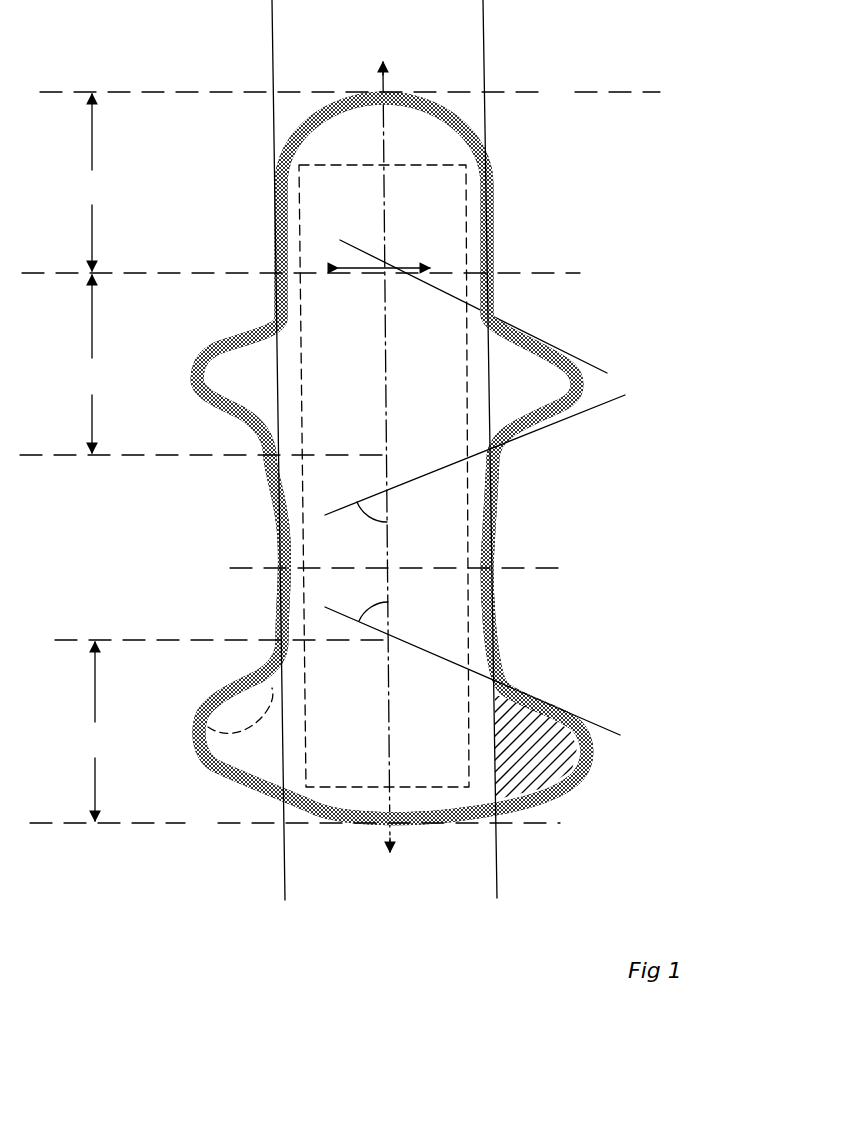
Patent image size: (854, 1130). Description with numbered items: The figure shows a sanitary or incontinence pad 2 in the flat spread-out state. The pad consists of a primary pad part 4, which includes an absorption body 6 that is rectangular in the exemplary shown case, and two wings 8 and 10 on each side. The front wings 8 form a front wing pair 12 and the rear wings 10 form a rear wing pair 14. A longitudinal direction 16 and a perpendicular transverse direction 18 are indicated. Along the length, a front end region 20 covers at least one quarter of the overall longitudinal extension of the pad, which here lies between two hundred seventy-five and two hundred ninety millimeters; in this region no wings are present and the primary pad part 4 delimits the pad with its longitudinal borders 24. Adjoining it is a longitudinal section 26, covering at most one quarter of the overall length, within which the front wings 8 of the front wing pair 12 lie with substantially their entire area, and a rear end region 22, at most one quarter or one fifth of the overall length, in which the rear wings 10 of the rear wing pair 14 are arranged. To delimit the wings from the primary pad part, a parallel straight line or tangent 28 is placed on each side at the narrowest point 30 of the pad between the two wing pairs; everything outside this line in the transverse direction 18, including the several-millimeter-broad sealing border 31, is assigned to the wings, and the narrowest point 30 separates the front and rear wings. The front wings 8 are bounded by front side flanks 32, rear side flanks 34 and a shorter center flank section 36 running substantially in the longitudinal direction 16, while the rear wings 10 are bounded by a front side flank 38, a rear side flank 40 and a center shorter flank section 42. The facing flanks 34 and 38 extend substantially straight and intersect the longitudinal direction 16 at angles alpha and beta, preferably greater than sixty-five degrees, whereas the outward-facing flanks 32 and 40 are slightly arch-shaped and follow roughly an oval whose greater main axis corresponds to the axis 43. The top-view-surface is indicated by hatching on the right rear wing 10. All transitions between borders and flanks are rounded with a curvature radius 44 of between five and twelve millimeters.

The sanitary or incontinence pad 2 is at (200, 90).
The primary pad part 4 is at (410, 148).
The absorption body 6 is at (425, 225).
The front wings 8 is at (228, 373).
The rear wings 10 is at (237, 750).
The front wing pair 12 is at (602, 377).
The rear wing pair 14 is at (614, 749).
The longitudinal direction 16 is at (383, 242).
The transverse direction 18 is at (367, 275).
The front end region 20 is at (350, 181).
The rear end region 22 is at (295, 731).
The longitudinal borders 24 is at (273, 212).
The longitudinal section 26 is at (300, 364).
The straight line or tangent 28 is at (283, 852).
The narrowest point 30 is at (500, 561).
The sealing border 31 is at (503, 651).
The front side flanks 32 is at (513, 327).
The rear side flanks 34 is at (540, 427).
The shorter center flank section 36 is at (586, 388).
The front side flank 38 is at (543, 693).
The rear side flank 40 is at (543, 793).
The center shorter flank section 42 is at (590, 742).
The axis 43 is at (415, 567).
The curvature radius 44 is at (160, 433).